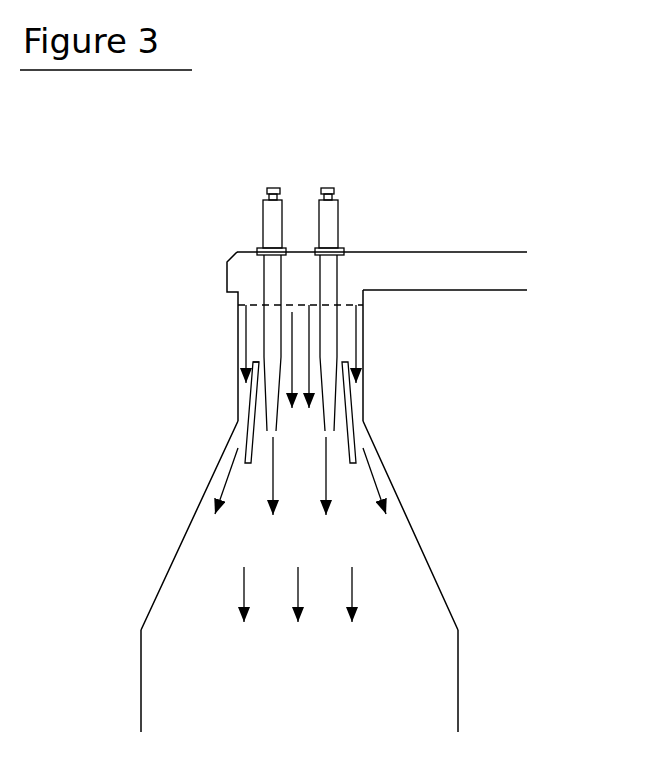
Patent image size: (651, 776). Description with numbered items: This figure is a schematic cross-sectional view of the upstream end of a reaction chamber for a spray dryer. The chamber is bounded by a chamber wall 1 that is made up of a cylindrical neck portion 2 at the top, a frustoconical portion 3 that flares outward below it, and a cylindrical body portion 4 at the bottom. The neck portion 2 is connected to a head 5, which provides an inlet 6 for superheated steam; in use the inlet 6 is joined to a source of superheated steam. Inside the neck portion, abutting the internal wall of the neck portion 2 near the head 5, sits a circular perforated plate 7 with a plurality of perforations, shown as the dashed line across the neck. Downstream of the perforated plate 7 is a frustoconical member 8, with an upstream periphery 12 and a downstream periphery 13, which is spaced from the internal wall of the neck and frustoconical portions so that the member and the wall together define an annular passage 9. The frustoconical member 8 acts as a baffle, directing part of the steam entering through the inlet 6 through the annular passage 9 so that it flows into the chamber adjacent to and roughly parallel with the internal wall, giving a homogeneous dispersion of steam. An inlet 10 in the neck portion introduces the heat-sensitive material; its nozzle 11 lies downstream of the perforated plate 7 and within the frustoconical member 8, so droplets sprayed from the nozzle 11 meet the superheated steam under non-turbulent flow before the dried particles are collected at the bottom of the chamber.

The chamber wall 1 is at (458, 718).
The cylindrical neck portion 2 is at (237, 347).
The frustoconical portion 3 is at (177, 552).
The cylindrical body portion 4 is at (141, 690).
The head 5 is at (250, 272).
The inlet 6 is at (503, 273).
The circular perforated plate 7 is at (345, 307).
The frustoconical member 8 is at (250, 408).
The annular passage 9 is at (240, 438).
The inlet 10 is at (299, 197).
The nozzle 11 is at (306, 432).
The upstream periphery 12 is at (253, 367).
The downstream periphery 13 is at (355, 455).